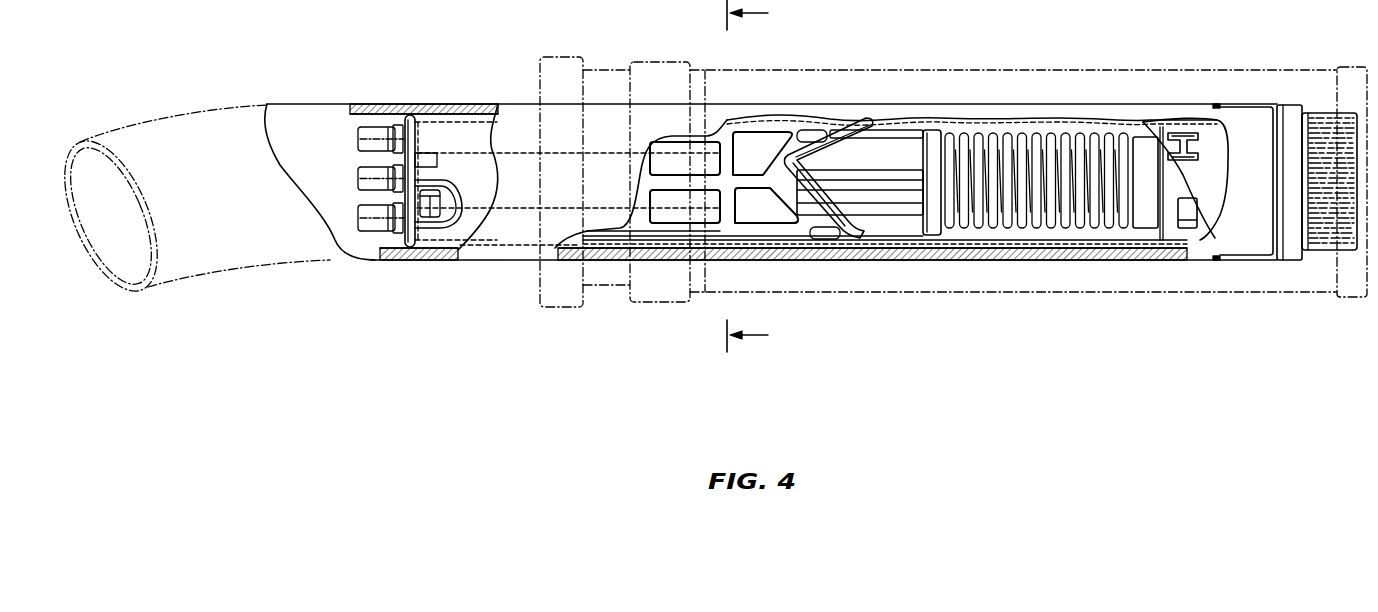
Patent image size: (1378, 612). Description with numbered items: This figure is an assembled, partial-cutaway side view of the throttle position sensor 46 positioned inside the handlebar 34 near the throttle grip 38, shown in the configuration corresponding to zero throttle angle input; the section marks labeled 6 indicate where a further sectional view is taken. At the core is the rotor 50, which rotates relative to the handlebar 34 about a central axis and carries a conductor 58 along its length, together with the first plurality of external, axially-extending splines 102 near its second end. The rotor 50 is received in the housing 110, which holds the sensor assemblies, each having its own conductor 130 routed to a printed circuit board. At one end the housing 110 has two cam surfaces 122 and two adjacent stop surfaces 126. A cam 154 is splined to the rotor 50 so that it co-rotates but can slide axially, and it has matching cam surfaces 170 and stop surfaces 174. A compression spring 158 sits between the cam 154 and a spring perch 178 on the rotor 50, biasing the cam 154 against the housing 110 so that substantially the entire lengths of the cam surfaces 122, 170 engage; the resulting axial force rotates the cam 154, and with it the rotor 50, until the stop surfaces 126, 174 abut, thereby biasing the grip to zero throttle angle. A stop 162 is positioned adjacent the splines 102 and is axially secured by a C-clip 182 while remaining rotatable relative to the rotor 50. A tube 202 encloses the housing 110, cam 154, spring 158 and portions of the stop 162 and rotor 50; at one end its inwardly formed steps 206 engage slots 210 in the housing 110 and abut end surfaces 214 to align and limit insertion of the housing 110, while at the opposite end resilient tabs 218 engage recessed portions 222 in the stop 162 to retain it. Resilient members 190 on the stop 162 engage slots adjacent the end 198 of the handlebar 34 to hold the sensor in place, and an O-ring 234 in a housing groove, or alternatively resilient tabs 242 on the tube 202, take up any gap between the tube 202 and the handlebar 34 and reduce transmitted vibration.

The handlebar 34 is at (315, 108).
The throttle grip 38 is at (1135, 66).
The throttle position sensor 46 is at (355, 122).
The rotor 50 is at (1144, 222).
The conductor 58 is at (365, 178).
The first plurality of external, axially-extending splines 102 is at (1326, 248).
The housing 110 is at (757, 160).
The cam surfaces 122 is at (815, 192).
The stop surfaces 126 is at (855, 140).
The conductor 130 is at (385, 130).
The cam 154 is at (920, 225).
The compression spring 158 is at (1033, 230).
The stop 162 is at (1287, 118).
The cam surfaces 170 is at (800, 205).
The stop surfaces 174 is at (843, 135).
The spring perch 178 is at (1128, 152).
The C-clip 182 is at (1154, 250).
The resilient members 190 is at (1218, 103).
The end 198 is at (1292, 232).
The tube 202 is at (962, 252).
The steps 206 is at (430, 153).
The slots 210 is at (458, 205).
The end surfaces 214 is at (425, 210).
The resilient tabs 218 is at (1197, 144).
The recessed portions 222 is at (1193, 213).
The O-ring 234 is at (410, 115).
The resilient tabs 242 is at (495, 97).
The section line 6- 6 is at (756, 176).